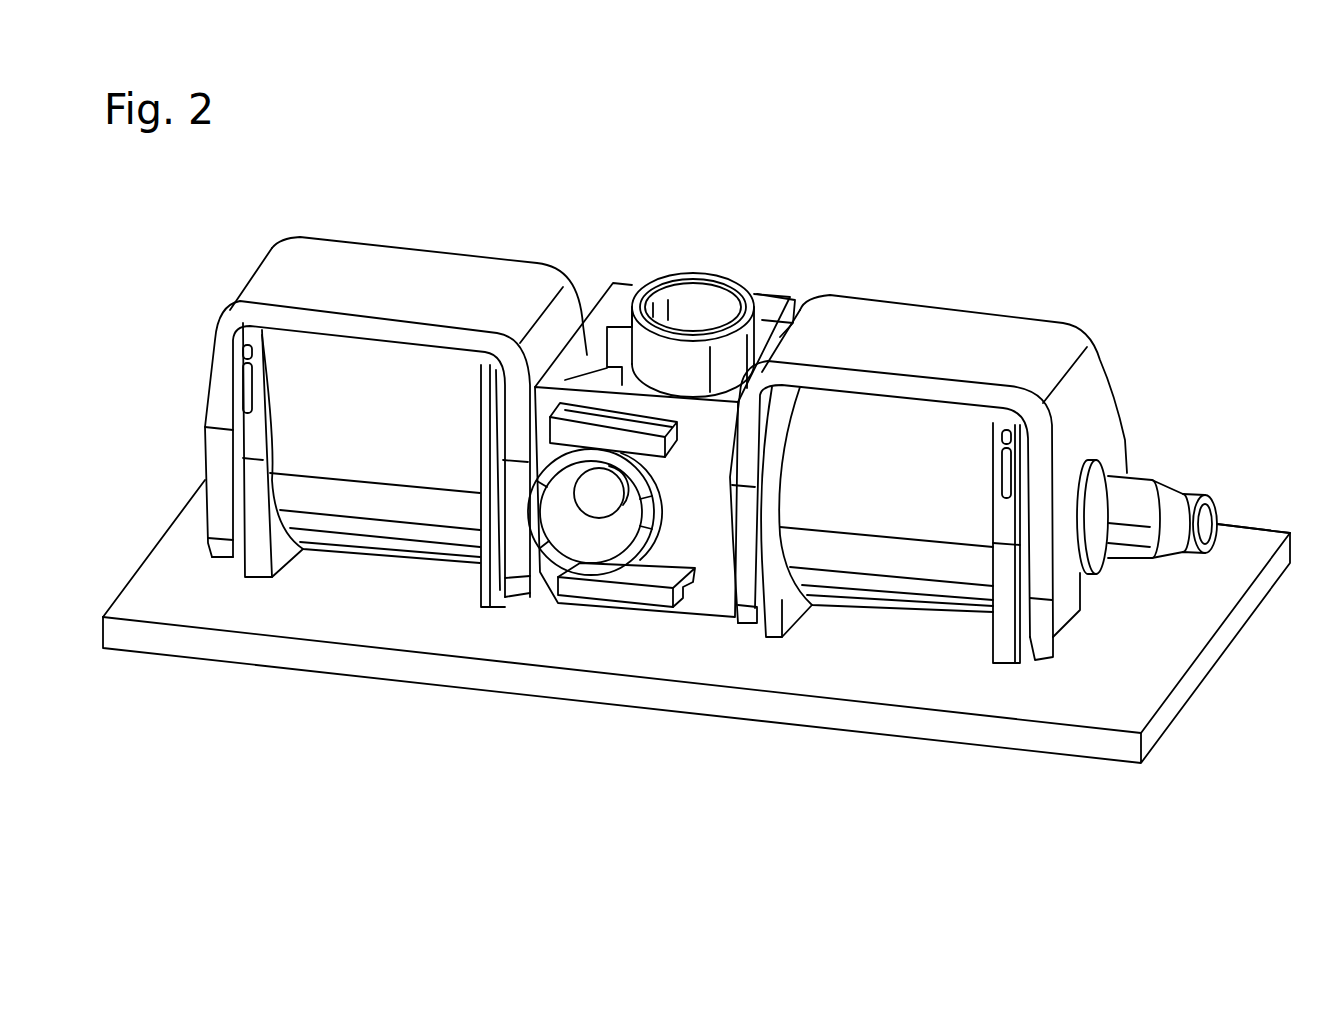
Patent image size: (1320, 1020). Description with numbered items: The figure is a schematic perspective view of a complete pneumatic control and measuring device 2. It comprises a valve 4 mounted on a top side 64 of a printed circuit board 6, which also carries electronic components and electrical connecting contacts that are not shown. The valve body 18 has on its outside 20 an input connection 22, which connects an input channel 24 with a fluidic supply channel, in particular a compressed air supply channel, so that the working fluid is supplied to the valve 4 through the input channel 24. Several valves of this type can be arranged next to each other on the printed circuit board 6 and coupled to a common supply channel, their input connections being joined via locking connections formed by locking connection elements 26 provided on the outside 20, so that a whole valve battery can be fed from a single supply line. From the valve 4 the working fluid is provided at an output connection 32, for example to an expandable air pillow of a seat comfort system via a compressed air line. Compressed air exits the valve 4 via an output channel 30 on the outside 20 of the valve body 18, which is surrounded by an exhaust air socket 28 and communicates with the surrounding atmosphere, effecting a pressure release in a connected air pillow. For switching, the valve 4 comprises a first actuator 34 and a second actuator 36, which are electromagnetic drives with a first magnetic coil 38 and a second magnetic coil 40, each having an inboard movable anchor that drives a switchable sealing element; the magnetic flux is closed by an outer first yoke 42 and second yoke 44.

The pneumatic control and measuring device 2 is at (1112, 178).
The valve 4 is at (625, 283).
The printed circuit board 6 is at (143, 545).
The valve body 18 is at (780, 290).
The outside 20 is at (712, 600).
The input connection 22 is at (563, 560).
The input channel 24 is at (605, 500).
The locking connection elements 26 is at (652, 597).
The exhaust air socket 28 is at (735, 283).
The output channel 30 is at (692, 303).
The output connection 32 is at (1137, 490).
The first actuator 34 is at (495, 240).
The second actuator 36 is at (929, 288).
The first magnetic coil 38 is at (400, 368).
The second magnetic coil 40 is at (955, 432).
The first yoke 42 is at (318, 260).
The second yoke 44 is at (1055, 345).
The top side 64 is at (1252, 537).